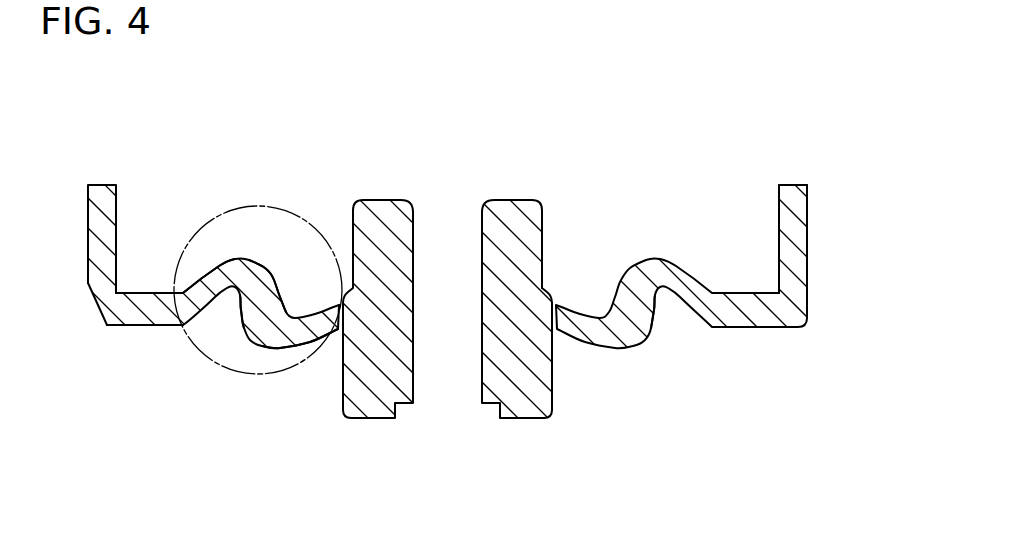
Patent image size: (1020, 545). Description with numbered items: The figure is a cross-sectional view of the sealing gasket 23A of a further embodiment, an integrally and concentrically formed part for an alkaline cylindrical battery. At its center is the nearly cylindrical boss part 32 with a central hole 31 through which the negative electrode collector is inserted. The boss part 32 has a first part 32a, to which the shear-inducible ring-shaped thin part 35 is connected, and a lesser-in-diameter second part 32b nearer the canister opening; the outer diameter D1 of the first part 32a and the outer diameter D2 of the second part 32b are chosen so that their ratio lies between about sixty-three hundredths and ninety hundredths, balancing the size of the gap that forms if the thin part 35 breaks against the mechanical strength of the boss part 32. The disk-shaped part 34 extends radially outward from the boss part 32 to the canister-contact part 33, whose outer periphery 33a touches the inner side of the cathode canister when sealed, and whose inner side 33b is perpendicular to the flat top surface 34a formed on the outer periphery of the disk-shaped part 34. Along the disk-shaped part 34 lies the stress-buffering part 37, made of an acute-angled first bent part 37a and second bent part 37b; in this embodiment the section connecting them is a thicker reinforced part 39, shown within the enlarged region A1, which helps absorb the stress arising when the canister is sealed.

The gasket 23A is at (510, 272).
The central hole 31 is at (482, 237).
The boss part 32 is at (510, 272).
The first part 32a is at (553, 347).
The second part 32b is at (541, 247).
The canister-contact part 33 is at (117, 238).
The outer periphery 33a is at (89, 283).
The inner side 33b is at (778, 210).
The disk-shaped part 34 is at (308, 346).
The flat top surface 34a is at (748, 293).
The shear-inducible ring-shaped thin part 35 is at (340, 316).
The stress-buffering part 37 is at (328, 157).
The first bent part 37a is at (283, 316).
The second bent part 37b is at (257, 268).
The reinforced part 39 is at (247, 317).
The enlarged region A1 is at (233, 373).
The outer diameter of the first part D1 is at (343, 425).
The outer diameter of the second part D2 is at (355, 123).